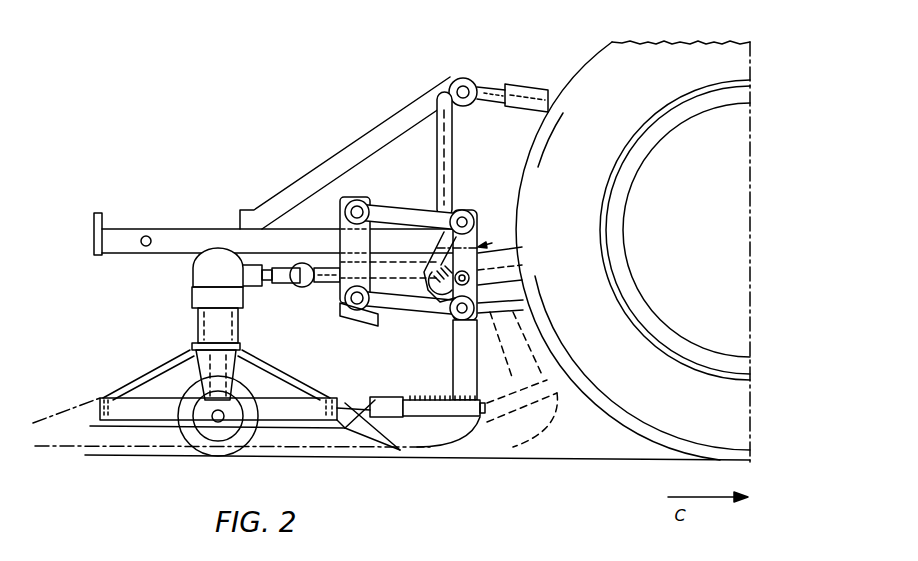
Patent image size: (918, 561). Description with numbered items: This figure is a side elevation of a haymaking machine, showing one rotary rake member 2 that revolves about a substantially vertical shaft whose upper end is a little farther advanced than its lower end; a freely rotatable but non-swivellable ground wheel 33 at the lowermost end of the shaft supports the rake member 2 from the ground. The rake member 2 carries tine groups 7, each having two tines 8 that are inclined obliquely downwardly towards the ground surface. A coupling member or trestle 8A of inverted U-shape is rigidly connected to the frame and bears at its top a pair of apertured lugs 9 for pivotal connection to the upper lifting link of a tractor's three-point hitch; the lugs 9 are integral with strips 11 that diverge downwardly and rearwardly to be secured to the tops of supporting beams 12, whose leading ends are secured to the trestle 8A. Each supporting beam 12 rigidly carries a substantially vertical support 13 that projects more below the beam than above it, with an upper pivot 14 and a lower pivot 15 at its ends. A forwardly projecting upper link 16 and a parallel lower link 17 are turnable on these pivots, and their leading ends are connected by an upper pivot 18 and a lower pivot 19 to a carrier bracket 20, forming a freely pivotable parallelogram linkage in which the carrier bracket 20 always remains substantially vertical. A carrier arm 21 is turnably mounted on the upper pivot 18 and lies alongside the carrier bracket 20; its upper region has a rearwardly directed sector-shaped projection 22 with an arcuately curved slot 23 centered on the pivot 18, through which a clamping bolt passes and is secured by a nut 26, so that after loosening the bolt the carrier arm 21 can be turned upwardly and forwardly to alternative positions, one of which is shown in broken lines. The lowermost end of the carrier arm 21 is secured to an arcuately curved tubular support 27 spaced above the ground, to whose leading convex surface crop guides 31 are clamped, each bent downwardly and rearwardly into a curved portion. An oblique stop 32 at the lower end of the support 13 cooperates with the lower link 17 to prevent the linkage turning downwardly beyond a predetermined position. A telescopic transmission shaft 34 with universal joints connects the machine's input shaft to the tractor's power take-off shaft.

The rotary rake member 2 is at (216, 324).
The tine group 7 is at (106, 449).
The tine 8 is at (390, 427).
The coupling member or trestle 8A is at (453, 141).
The apertured lug 9 is at (466, 79).
The strip 11 is at (394, 116).
The supporting beam 12 is at (216, 228).
The support 13 is at (340, 224).
The upper pivot 14 is at (351, 208).
The lower pivot 15 is at (349, 303).
The upper link 16 is at (396, 203).
The lower link 17 is at (378, 320).
The upper pivot 18 is at (468, 212).
The lower pivot 19 is at (453, 327).
The carrier bracket 20 is at (473, 231).
The carrier arm 21 is at (452, 382).
The sector-shaped projection 22 is at (497, 237).
The arcuately curved slot 23 is at (437, 303).
The nut 26 is at (478, 292).
The arcuately curved tubular support 27 is at (396, 398).
The crop guide 31 is at (440, 448).
The oblique stop 32 is at (355, 327).
The ground wheel 33 is at (215, 457).
The telescopic transmission shaft 34 is at (512, 259).